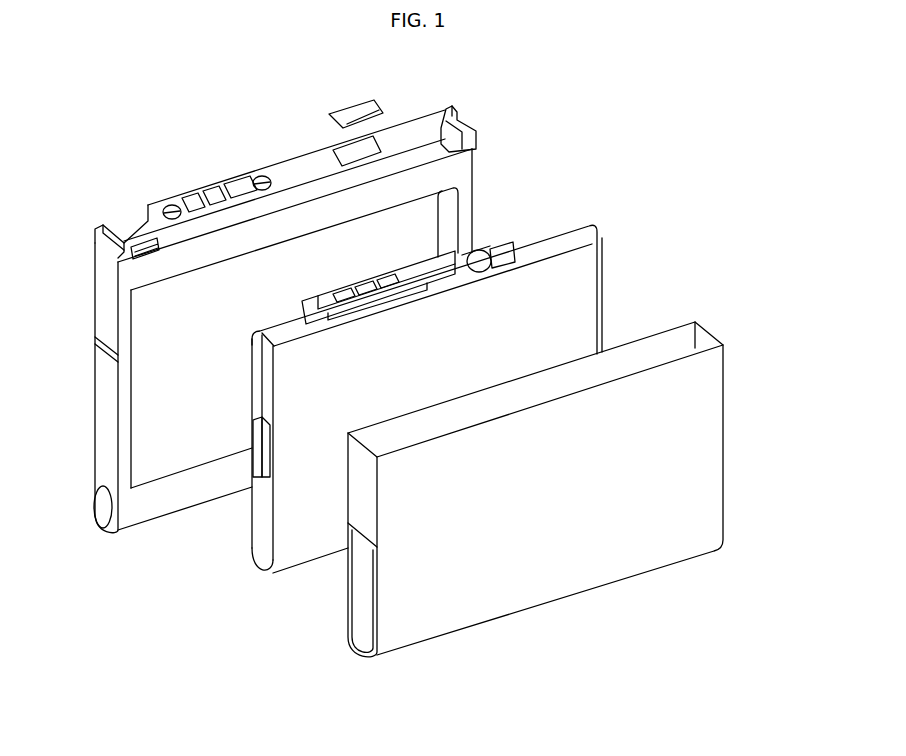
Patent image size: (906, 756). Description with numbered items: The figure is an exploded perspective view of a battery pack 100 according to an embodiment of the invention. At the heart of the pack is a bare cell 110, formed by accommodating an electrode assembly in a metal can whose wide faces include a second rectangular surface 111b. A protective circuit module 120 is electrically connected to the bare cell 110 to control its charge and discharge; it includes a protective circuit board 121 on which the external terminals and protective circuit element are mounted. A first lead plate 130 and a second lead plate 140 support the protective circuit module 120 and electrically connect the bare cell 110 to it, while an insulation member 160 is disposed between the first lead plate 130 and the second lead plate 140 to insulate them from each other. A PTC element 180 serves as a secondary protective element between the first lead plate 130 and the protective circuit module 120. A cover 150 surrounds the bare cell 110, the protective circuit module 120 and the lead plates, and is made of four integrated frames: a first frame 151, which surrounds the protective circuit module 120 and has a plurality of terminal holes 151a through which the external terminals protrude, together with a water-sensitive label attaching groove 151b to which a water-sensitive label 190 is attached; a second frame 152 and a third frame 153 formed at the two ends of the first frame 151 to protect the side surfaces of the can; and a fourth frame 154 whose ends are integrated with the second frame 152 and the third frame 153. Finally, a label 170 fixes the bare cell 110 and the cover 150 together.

The battery pack 100 is at (108, 113).
The bare cell 110 is at (312, 563).
The second rectangular surface 111b is at (292, 557).
The protective circuit module 120 is at (410, 262).
The protective circuit board 121 is at (345, 292).
The first lead plate 130 is at (608, 263).
The second lead plate 140 is at (257, 390).
The cover 150 is at (90, 277).
The first frame 151 is at (190, 262).
The terminal holes 151a is at (233, 188).
The water-sensitive label attaching groove 151b is at (343, 150).
The second frame 152 is at (120, 382).
The third frame 153 is at (465, 192).
The fourth frame 154 is at (152, 497).
The insulation member 160 is at (256, 530).
The label 170 is at (732, 420).
The PTC element 180 is at (482, 253).
The water-sensitive label 190 is at (357, 110).